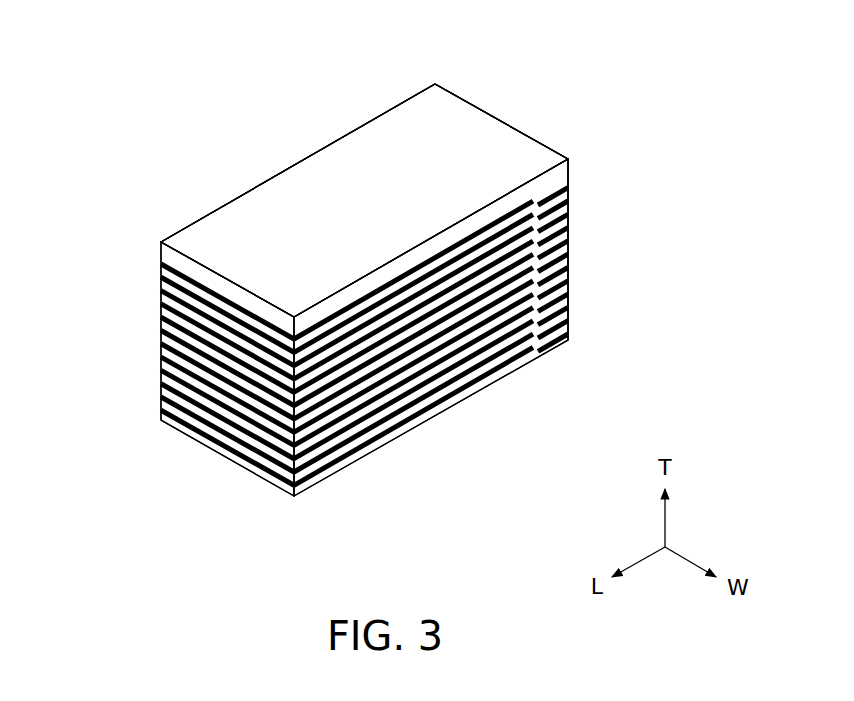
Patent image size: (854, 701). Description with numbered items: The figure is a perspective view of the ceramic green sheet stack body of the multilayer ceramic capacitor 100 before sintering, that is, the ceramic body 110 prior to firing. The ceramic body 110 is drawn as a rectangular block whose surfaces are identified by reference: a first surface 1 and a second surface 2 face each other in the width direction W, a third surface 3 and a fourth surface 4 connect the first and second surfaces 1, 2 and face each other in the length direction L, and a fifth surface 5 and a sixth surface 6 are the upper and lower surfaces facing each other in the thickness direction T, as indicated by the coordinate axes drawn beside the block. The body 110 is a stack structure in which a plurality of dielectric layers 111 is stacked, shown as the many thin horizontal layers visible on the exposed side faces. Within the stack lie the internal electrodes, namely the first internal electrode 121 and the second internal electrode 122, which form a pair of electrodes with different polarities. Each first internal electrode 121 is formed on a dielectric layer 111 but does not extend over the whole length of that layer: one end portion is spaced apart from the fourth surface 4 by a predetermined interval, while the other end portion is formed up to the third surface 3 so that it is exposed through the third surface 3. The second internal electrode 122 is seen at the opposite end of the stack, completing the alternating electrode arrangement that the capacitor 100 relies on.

The multilayer ceramic capacitor 100 is at (138, 33).
The ceramic body 110 is at (303, 183).
The first surface 1 is at (237, 235).
The second surface 2 is at (541, 267).
The third surface 3 is at (220, 412).
The fourth surface 4 is at (503, 162).
The fifth surface 5 is at (387, 148).
The sixth surface 6 is at (437, 408).
The dielectric layer 111 is at (161, 351).
The first internal electrode 121 is at (161, 302).
The second internal electrode 122 is at (540, 355).